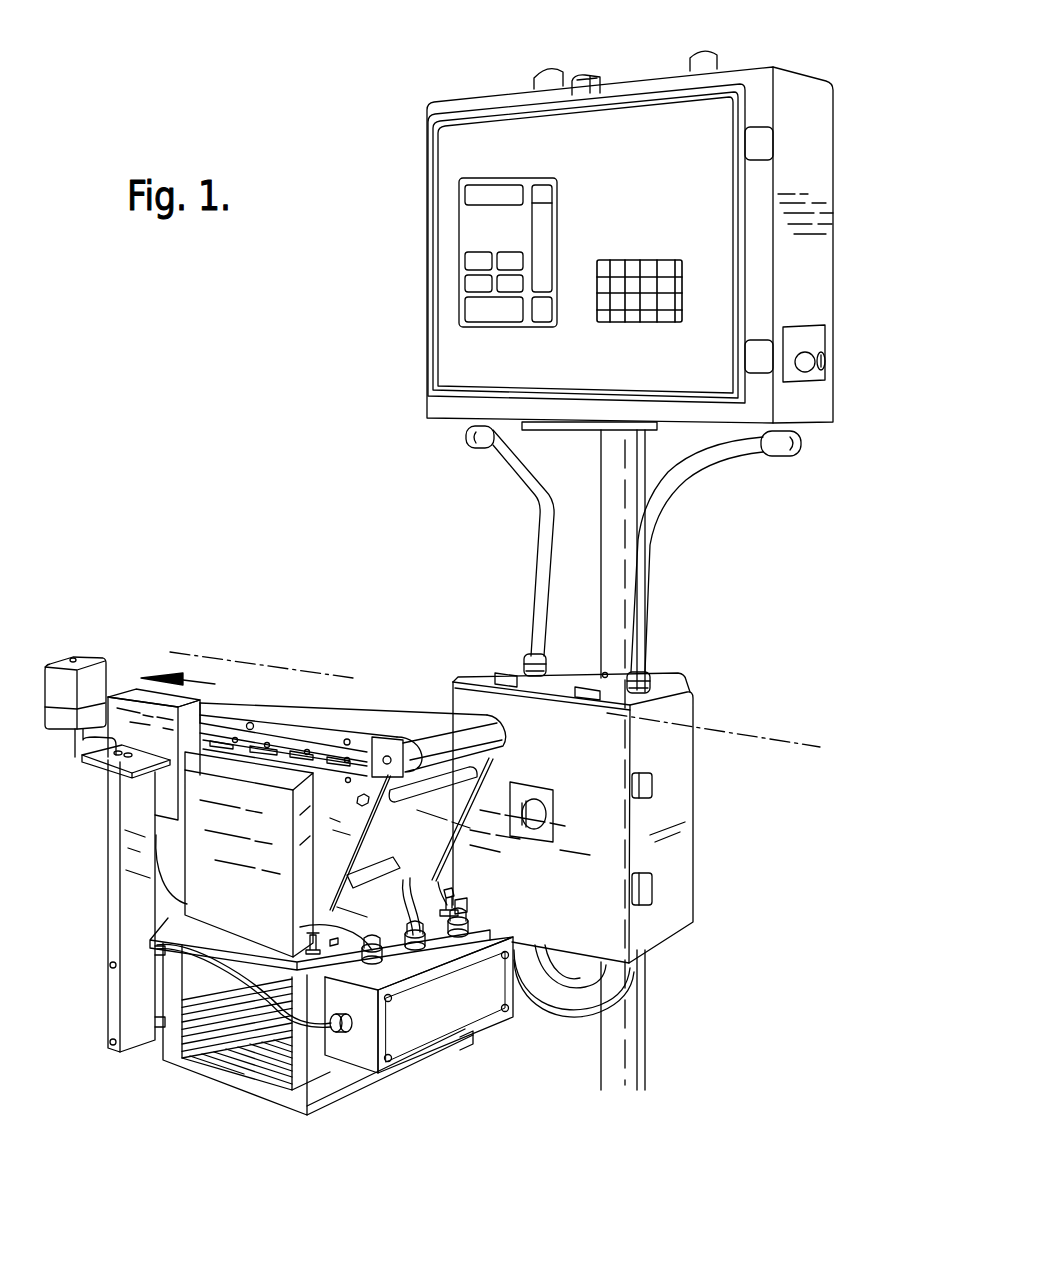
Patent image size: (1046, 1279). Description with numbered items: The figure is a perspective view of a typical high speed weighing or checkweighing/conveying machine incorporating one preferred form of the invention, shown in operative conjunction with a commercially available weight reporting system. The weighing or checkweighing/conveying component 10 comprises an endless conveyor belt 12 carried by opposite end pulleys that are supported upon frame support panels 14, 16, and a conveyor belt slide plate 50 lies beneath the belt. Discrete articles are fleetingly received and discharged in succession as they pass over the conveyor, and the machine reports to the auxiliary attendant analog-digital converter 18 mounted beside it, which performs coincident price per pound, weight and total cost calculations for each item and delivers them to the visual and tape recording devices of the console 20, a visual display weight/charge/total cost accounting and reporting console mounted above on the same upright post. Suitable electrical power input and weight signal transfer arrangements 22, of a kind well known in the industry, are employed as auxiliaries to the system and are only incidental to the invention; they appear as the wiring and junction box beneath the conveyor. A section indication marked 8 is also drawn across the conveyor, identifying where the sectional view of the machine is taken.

The weighing or checkweighing/conveying component 10 is at (253, 627).
The endless conveyor belt 12 is at (363, 702).
The frame support panel 14 is at (445, 842).
The frame support panel 16 is at (362, 821).
The analog-digital converter 18 is at (702, 837).
The console 20 is at (470, 78).
The electrical power input and weight signal transfer arrangements 22 is at (447, 1083).
The conveyor belt slide plate 50 is at (416, 706).
The section line 8- 8 is at (197, 648).